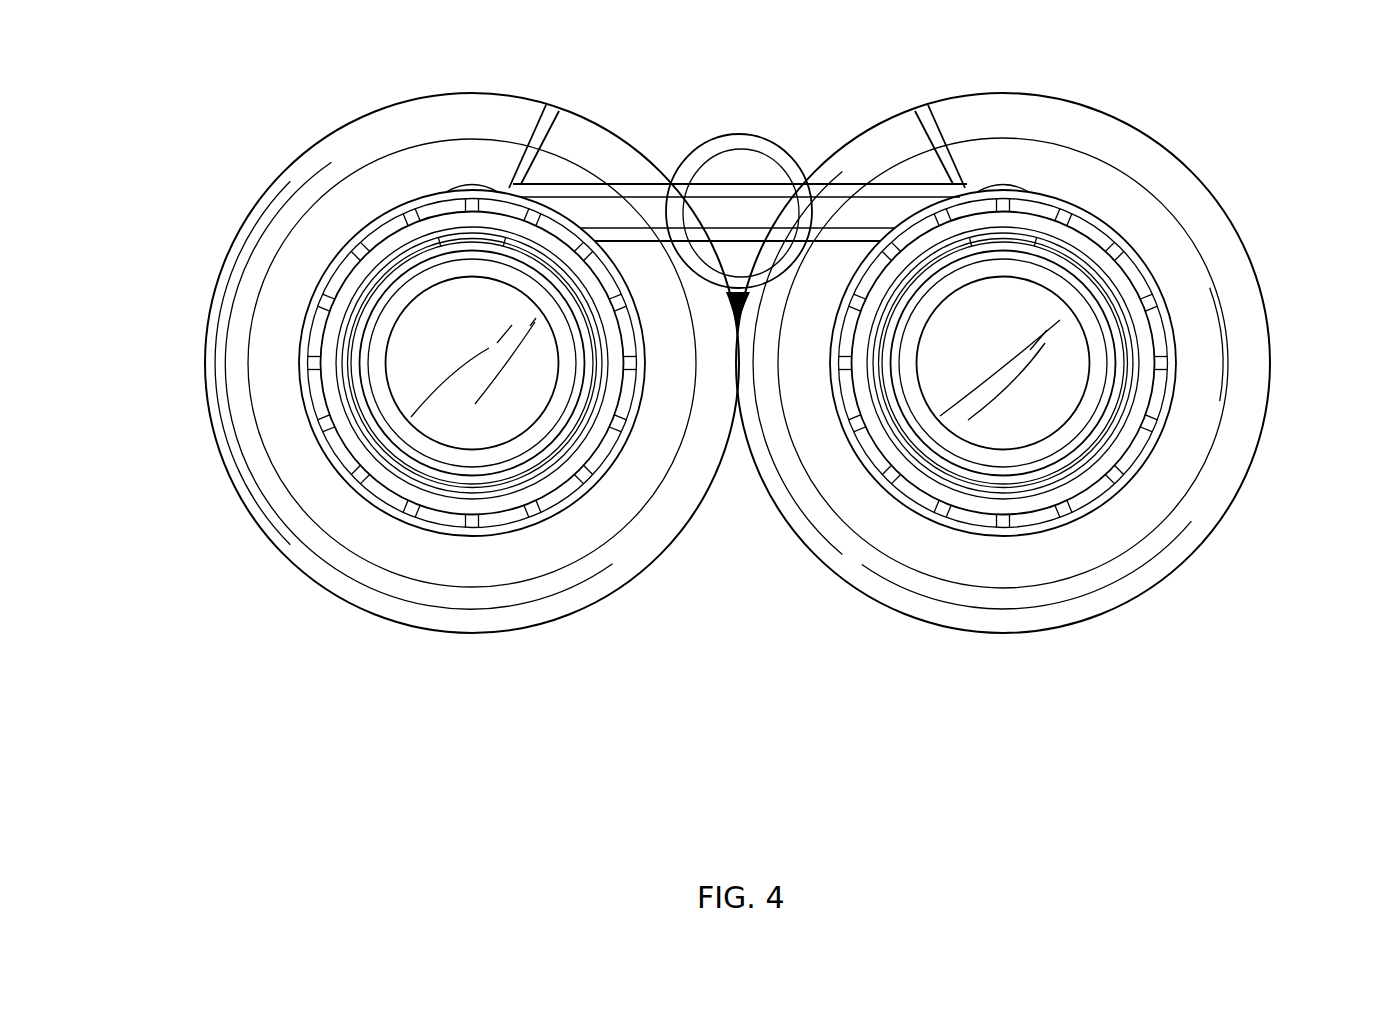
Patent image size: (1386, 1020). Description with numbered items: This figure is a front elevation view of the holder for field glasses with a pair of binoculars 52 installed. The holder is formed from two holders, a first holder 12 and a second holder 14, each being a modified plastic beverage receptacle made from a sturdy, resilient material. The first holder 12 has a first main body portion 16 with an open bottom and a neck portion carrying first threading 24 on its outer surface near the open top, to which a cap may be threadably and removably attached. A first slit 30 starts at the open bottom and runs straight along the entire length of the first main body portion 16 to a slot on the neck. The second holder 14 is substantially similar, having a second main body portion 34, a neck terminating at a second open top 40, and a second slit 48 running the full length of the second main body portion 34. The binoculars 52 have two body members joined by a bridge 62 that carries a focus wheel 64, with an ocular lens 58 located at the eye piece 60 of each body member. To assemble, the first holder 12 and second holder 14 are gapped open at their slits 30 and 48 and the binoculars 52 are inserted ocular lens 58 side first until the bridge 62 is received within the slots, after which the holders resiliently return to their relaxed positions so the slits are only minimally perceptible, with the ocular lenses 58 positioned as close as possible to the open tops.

The first holder 12 is at (1057, 354).
The second holder 14 is at (416, 356).
The first main body portion 16 is at (1240, 412).
The first threading 24 is at (1118, 452).
The first slit 30 is at (935, 105).
The second main body portion 34 is at (235, 384).
The second open top 40 is at (392, 477).
The second slit 48 is at (535, 128).
The binoculars 52 is at (760, 179).
The ocular lens 58 is at (457, 412).
The eye piece 60 is at (535, 437).
The bridge 62 is at (597, 208).
The focus wheel 64 is at (728, 135).